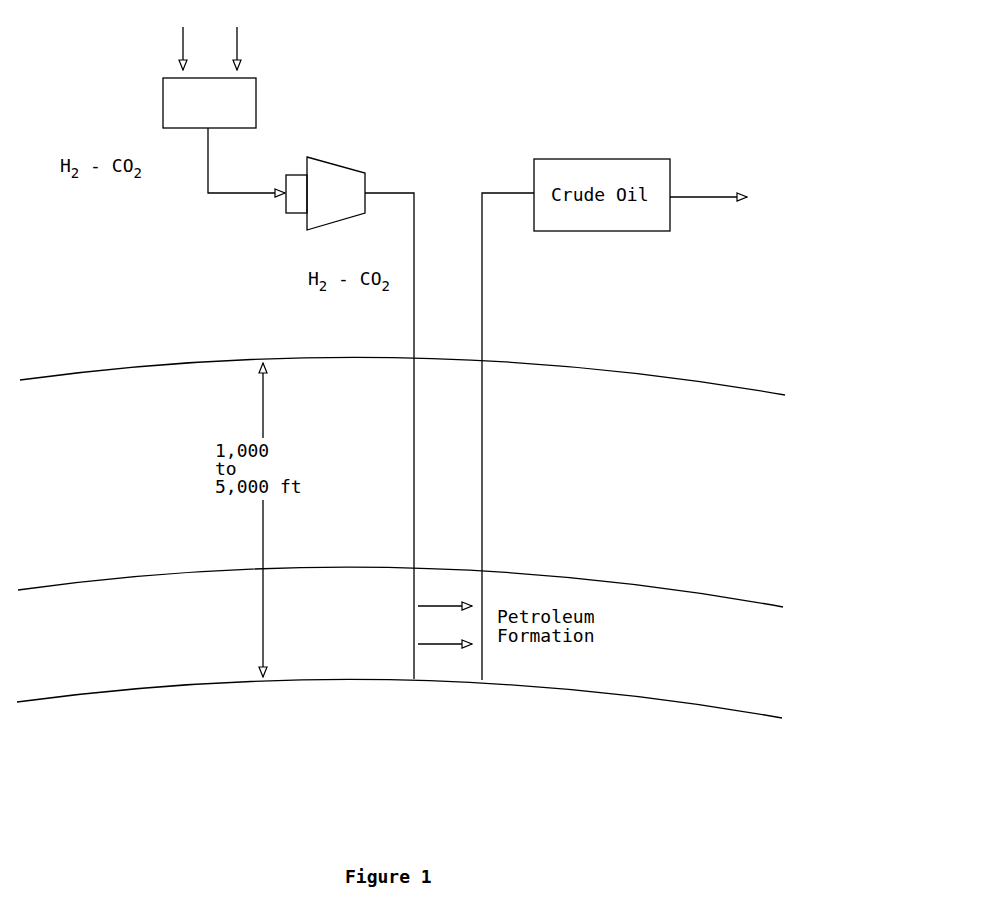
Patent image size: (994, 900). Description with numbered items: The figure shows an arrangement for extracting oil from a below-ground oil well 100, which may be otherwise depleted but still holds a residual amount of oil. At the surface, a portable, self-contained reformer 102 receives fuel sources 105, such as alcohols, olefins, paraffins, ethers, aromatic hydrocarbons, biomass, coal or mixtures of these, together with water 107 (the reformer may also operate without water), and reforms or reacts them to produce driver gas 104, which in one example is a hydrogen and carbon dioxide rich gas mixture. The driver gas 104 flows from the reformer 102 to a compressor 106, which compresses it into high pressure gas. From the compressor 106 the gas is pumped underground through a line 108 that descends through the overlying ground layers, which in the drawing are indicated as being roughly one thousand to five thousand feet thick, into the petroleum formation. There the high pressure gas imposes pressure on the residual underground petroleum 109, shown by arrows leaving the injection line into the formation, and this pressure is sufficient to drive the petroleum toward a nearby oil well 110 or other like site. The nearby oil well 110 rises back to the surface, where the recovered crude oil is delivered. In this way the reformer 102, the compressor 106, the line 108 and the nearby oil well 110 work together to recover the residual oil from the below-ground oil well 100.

The below-ground oil well 100 is at (445, 365).
The portable, self-contained reformer 102 is at (209, 103).
The driver gas 104 is at (207, 167).
The fuel sources 105 is at (165, 39).
The compressor 106 is at (325, 193).
The water 107 is at (256, 39).
The line 108 is at (414, 463).
The residual underground petroleum 109 is at (445, 625).
The nearby oil well 110 is at (482, 466).